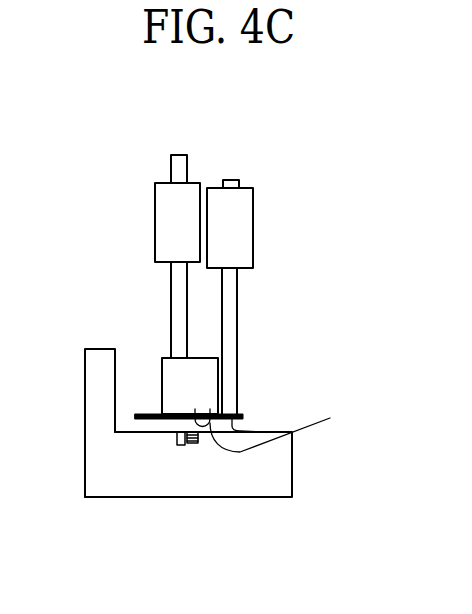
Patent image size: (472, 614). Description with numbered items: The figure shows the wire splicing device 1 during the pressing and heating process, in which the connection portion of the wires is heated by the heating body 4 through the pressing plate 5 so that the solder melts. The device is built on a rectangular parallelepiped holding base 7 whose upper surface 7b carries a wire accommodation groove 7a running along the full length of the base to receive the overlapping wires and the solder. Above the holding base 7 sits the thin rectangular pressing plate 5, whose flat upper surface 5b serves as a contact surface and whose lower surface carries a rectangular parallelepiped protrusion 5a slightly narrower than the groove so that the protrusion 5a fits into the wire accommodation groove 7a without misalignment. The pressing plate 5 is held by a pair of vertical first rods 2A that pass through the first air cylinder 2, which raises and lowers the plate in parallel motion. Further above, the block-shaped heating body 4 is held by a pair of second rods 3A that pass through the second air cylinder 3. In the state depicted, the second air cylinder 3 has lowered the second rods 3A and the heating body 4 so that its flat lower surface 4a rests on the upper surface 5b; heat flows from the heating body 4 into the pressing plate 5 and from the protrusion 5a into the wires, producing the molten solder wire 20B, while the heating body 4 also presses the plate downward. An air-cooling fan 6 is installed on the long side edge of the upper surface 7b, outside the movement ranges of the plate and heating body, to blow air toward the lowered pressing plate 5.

The wire splicing device 1 is at (328, 156).
The first air cylinder 2 is at (253, 222).
The first rods 2A is at (233, 180).
The second air cylinder 3 is at (155, 210).
The second rods 3A is at (180, 155).
The heating body 4 is at (168, 372).
The lower surface of heating body 4a is at (208, 409).
The pressing plate 5 is at (262, 430).
The protrusion 5a is at (287, 429).
The upper surface of pressing plate 5b is at (147, 414).
The air-cooling fan 6 is at (105, 349).
The holding base 7 is at (273, 466).
The wire accommodation groove 7a is at (178, 434).
The upper surface of holding base 7b is at (267, 430).
The molten solder wire 20B is at (195, 447).